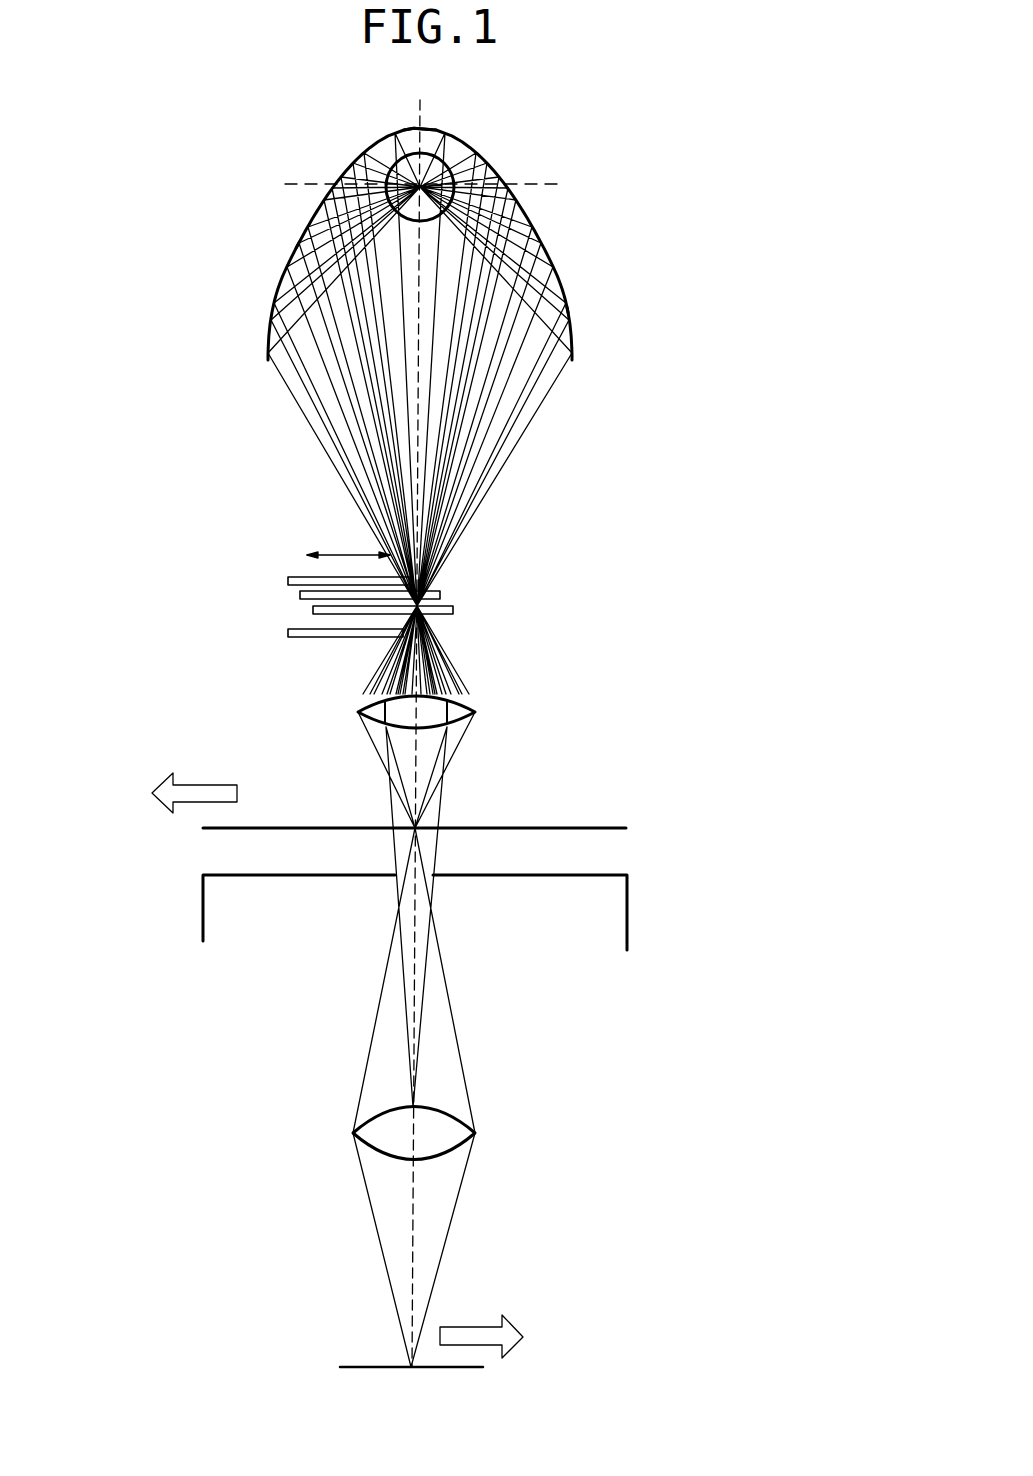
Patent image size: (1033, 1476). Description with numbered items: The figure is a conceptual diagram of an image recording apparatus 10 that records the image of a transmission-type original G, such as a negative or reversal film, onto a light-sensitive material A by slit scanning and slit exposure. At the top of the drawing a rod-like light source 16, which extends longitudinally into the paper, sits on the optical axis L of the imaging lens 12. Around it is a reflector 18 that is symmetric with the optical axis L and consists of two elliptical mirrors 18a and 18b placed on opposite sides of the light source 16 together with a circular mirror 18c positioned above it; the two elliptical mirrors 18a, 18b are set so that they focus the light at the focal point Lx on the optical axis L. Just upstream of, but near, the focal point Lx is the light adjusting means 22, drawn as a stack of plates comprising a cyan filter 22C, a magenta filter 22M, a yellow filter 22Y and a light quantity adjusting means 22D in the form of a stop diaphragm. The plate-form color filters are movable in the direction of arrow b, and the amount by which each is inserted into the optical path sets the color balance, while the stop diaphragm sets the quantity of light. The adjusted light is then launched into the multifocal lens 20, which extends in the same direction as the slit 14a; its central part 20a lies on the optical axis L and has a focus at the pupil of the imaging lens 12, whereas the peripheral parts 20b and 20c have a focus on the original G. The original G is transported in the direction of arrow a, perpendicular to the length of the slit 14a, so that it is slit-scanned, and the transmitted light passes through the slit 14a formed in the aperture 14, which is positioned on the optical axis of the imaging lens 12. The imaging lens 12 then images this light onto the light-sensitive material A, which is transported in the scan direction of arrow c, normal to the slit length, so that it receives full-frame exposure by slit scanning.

The image recording apparatus 10 is at (709, 262).
The imaging lens 12 is at (475, 1133).
The aperture 14 is at (415, 945).
The slit 14a is at (390, 887).
The light source 16 is at (427, 223).
The reflector 18 is at (465, 222).
The elliptical mirror 18a is at (568, 327).
The elliptical mirror 18b is at (300, 245).
The circular mirror 18c is at (455, 132).
The multifocal lens 20 is at (408, 724).
The central part 20a is at (447, 730).
The peripheral part 20b is at (473, 713).
The peripheral part 20c is at (358, 712).
The light adjusting means 22 is at (369, 526).
The cyan filter 22C is at (288, 578).
The magenta filter 22M is at (440, 595).
The yellow filter 22Y is at (452, 612).
The light quantity adjusting means 22D is at (288, 629).
The original G is at (578, 832).
The optical axis L is at (413, 1185).
The focal point Lx is at (439, 621).
The light-sensitive material A is at (363, 1367).
The direction of transport of the original a is at (237, 790).
The direction of filter movement b is at (340, 556).
The scan direction c is at (468, 1325).